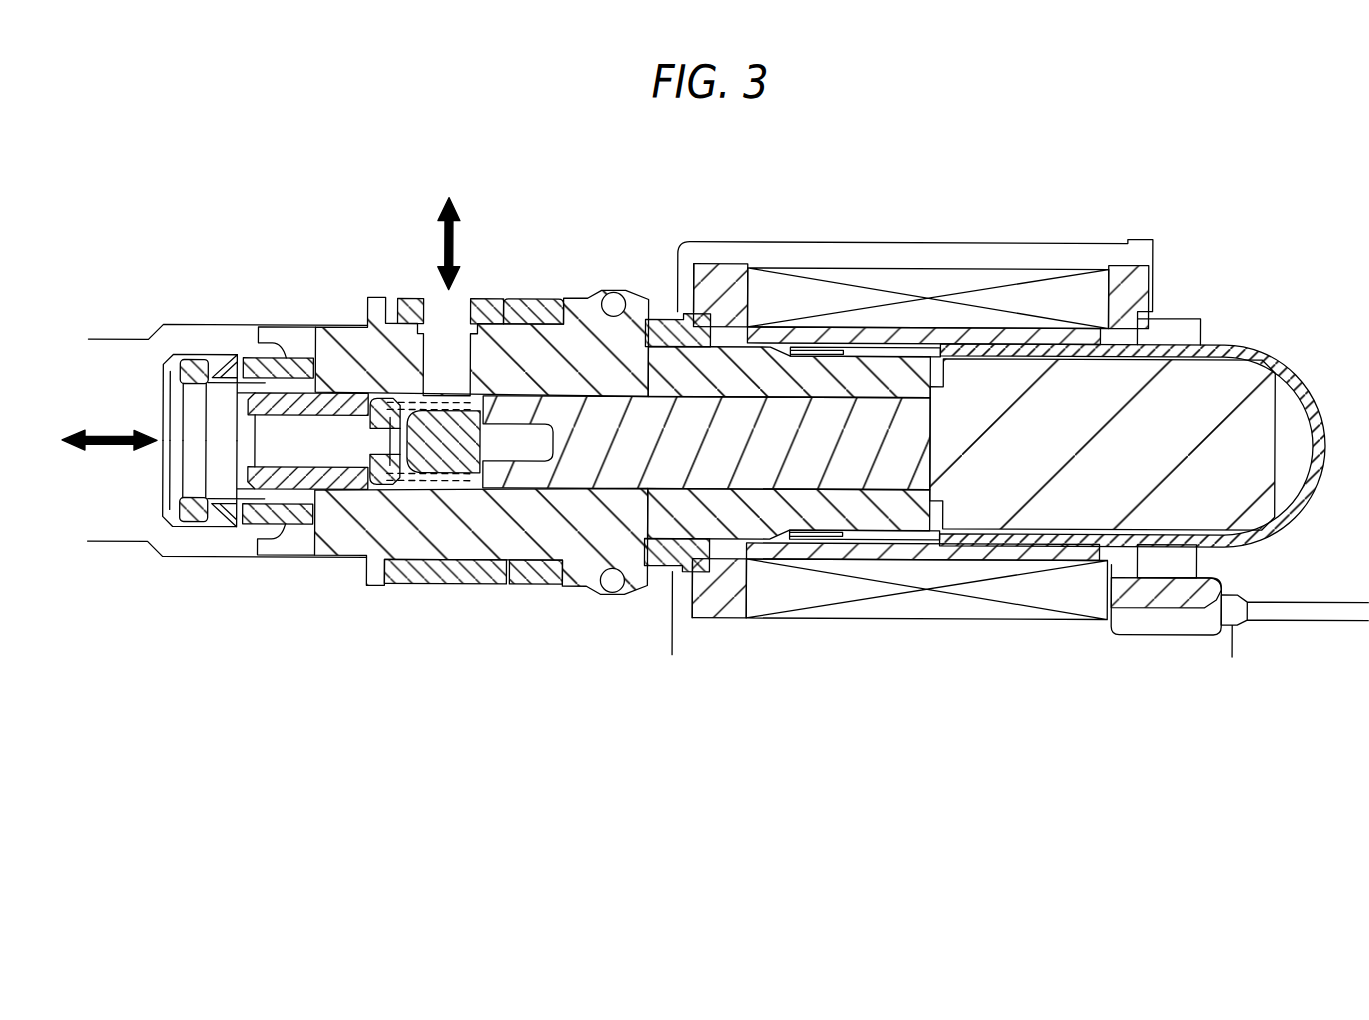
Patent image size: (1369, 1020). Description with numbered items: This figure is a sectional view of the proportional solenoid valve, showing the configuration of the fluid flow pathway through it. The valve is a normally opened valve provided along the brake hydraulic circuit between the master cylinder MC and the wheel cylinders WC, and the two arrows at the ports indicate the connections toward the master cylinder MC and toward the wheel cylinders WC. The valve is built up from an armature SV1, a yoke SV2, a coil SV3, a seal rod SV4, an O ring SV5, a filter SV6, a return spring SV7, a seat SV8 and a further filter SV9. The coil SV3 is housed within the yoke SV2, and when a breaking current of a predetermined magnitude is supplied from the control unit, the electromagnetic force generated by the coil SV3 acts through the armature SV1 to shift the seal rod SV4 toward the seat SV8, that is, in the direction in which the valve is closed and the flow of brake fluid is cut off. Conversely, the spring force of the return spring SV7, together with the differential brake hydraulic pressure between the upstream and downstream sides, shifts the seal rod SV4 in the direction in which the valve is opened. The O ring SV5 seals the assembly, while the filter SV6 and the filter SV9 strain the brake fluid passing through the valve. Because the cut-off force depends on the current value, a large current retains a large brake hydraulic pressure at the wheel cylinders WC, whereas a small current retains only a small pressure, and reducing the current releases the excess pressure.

The armature SV1 is at (1190, 380).
The yoke SV2 is at (1003, 255).
The coil SV3 is at (950, 609).
The seal rod SV4 is at (537, 413).
The O ring SV5 is at (533, 297).
The filter SV6 is at (493, 584).
The return spring SV7 is at (398, 584).
The seat SV8 is at (403, 415).
The filter SV9 is at (193, 360).
The master cylinder MC is at (450, 227).
The wheel cylinders WC is at (87, 439).